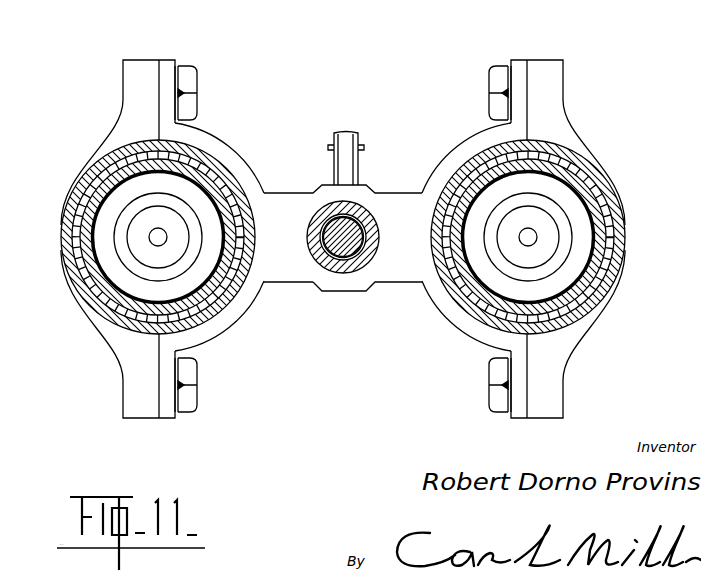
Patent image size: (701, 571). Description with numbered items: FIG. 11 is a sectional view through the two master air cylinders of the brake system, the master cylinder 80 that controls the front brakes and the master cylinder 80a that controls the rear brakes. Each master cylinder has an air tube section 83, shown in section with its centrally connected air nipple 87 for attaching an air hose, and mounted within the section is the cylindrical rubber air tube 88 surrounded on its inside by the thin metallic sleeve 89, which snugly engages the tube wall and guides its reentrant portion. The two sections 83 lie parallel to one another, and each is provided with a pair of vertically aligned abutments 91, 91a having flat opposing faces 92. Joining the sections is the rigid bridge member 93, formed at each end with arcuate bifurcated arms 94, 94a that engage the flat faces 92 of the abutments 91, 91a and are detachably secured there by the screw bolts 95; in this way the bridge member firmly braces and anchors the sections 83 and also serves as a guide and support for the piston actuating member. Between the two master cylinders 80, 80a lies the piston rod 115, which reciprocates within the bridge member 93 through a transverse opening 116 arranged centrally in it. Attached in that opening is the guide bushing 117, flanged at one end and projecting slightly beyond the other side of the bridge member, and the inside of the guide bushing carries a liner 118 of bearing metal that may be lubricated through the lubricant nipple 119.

The master cylinder 80 is at (62, 258).
The master cylinder 80a is at (630, 222).
The air tube section 83 is at (72, 203).
The air nipple 87 is at (168, 252).
The air tube 88 is at (77, 284).
The metallic sleeve 89 is at (78, 232).
The abutment 91 is at (132, 83).
The abutment 91a is at (132, 393).
The flat opposing faces 92 is at (158, 103).
The bridge member 93 is at (393, 207).
The arcuate bifurcated arm 94 is at (222, 152).
The arcuate bifurcated arm 94a is at (228, 313).
The screw bolts 95 is at (188, 82).
The piston rod 115 is at (352, 238).
The transverse opening 116 is at (312, 258).
The guide bushing 117 is at (363, 277).
The liner 118 is at (338, 263).
The lubricant nipple 119 is at (340, 142).